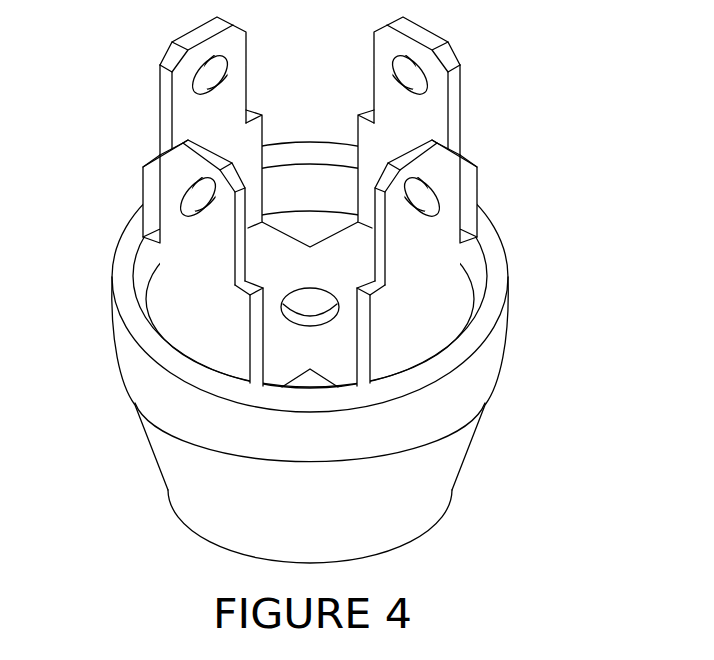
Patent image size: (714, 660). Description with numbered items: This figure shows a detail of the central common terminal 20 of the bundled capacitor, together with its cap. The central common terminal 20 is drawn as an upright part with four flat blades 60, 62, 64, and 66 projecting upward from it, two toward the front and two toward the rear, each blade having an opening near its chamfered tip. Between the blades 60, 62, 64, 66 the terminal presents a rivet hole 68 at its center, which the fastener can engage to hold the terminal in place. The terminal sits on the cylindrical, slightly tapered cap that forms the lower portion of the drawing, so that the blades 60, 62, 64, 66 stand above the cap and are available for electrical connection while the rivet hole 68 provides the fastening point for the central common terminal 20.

The central common terminal 20 is at (562, 85).
The blade 60 is at (187, 283).
The blade 62 is at (168, 100).
The blade 64 is at (452, 100).
The blade 66 is at (433, 283).
The rivet hole 68 is at (310, 288).